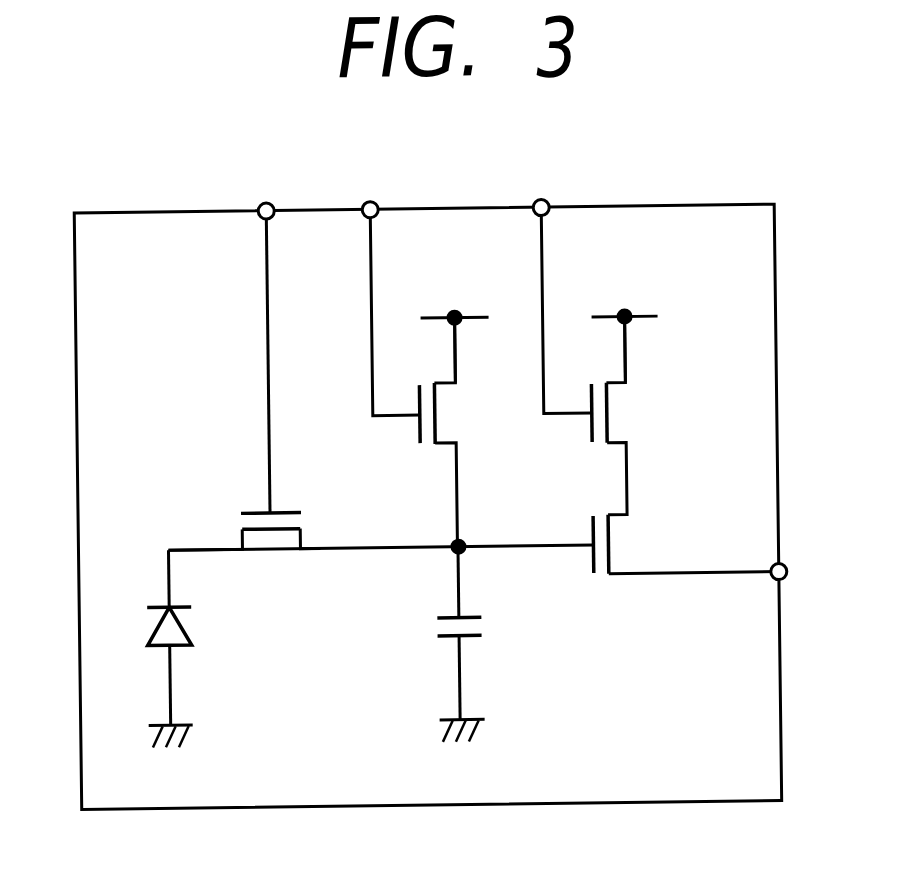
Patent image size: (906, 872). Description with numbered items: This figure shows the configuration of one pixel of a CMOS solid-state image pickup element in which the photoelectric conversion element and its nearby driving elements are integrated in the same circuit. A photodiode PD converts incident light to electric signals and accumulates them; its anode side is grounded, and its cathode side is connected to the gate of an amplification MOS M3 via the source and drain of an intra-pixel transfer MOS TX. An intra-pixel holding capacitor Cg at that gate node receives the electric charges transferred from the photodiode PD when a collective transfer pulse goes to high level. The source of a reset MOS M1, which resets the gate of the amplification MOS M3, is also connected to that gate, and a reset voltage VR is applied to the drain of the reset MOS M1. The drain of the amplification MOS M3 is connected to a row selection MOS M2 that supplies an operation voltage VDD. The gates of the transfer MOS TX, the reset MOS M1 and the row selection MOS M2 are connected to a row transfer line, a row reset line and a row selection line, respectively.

The reset voltage VR is at (454, 326).
The operation voltage VDD is at (625, 326).
The reset MOS M1 is at (459, 432).
The row selection MOS M2 is at (637, 415).
The amplification MOS M3 is at (686, 543).
The intra-pixel transfer MOS TX is at (244, 554).
The photodiode PD is at (199, 648).
The intra-pixel holding capacitor Cg is at (490, 644).